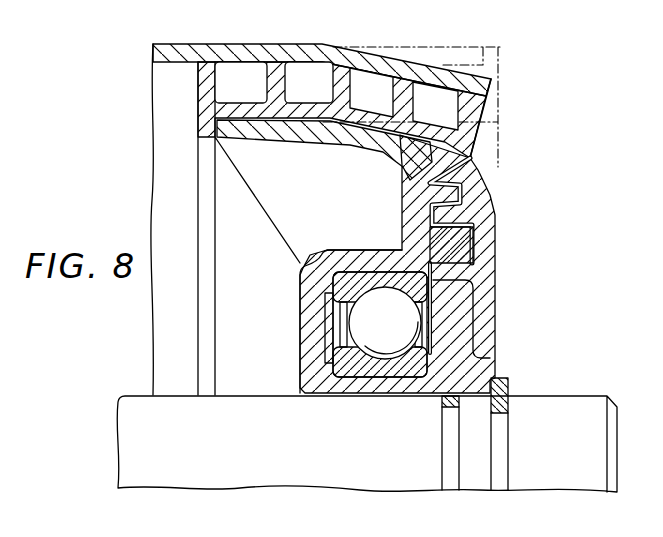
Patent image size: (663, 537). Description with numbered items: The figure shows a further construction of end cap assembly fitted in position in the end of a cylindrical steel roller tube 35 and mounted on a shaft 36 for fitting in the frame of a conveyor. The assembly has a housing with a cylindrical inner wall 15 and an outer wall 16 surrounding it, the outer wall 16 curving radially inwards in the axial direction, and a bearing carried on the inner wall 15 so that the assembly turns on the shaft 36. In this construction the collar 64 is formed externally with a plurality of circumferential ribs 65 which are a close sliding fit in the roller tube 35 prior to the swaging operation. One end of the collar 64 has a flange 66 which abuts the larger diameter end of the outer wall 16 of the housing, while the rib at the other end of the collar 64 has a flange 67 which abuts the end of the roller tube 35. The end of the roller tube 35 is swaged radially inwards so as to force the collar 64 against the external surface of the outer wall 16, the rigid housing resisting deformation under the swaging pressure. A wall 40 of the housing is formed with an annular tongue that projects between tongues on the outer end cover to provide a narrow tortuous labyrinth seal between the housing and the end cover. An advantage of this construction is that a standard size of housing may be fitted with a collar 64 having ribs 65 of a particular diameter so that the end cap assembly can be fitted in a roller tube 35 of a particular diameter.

The roller tube 35 is at (210, 44).
The collar 64 is at (197, 92).
The flange 66 is at (197, 123).
The outer wall 16 is at (282, 140).
The circumferential ribs 65 is at (445, 105).
The flange 67 is at (490, 82).
The wall of the housing 40 is at (428, 186).
The inner wall 15 is at (343, 250).
The shaft 36 is at (549, 397).